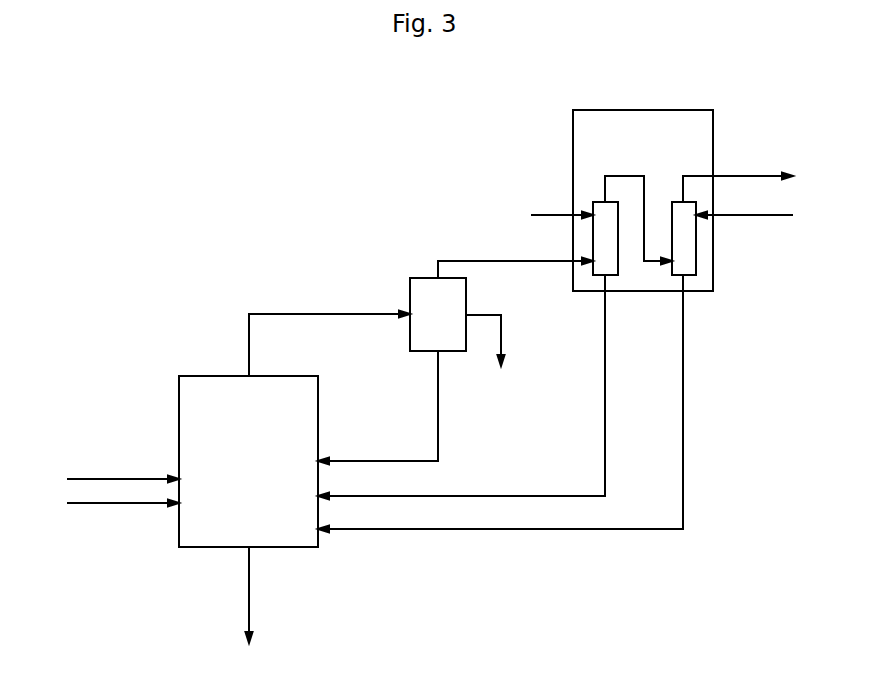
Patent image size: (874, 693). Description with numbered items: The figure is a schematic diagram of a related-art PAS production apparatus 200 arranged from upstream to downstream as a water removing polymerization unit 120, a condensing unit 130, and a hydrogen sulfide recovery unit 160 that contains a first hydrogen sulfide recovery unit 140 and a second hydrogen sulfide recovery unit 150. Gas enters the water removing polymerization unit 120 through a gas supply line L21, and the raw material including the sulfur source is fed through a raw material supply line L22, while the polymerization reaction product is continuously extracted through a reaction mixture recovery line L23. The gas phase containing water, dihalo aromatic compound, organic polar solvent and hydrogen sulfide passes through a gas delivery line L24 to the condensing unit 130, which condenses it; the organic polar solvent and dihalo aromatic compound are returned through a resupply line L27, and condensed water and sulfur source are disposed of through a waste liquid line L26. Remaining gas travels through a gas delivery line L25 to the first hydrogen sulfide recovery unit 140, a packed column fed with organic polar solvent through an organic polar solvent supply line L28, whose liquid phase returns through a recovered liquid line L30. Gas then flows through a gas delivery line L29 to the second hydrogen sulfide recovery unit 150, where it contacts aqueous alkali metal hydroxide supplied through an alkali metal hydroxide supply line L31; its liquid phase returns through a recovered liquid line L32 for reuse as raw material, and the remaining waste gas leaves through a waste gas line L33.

The PAS production apparatus 200 is at (167, 233).
The water removing polymerization unit 120 is at (201, 376).
The condensing unit 130 is at (417, 274).
The first hydrogen sulfide recovery unit 140 is at (593, 268).
The second hydrogen sulfide recovery unit 150 is at (696, 266).
The hydrogen sulfide recovery unit 160 is at (661, 109).
The gas supply line L21 is at (70, 479).
The raw material supply line L22 is at (70, 503).
The reaction mixture recovery line L23 is at (251, 591).
The gas delivery line L24 is at (301, 311).
The gas delivery line L25 is at (484, 261).
The waste liquid line L26 is at (503, 337).
The resupply line L27 is at (440, 411).
The organic polar solvent supply line L28 is at (546, 212).
The gas delivery line L29 is at (626, 173).
The recovered liquid line L30 is at (607, 411).
The alkali metal hydroxide supply line L31 is at (765, 217).
The recovered liquid line L32 is at (685, 411).
The waste gas line L33 is at (747, 175).